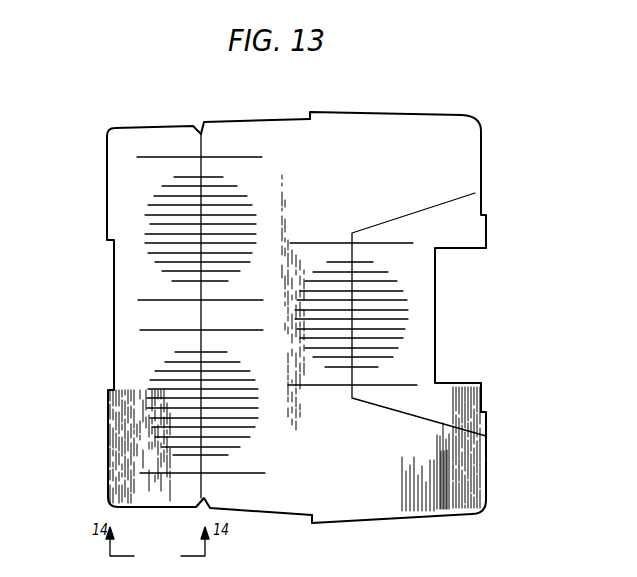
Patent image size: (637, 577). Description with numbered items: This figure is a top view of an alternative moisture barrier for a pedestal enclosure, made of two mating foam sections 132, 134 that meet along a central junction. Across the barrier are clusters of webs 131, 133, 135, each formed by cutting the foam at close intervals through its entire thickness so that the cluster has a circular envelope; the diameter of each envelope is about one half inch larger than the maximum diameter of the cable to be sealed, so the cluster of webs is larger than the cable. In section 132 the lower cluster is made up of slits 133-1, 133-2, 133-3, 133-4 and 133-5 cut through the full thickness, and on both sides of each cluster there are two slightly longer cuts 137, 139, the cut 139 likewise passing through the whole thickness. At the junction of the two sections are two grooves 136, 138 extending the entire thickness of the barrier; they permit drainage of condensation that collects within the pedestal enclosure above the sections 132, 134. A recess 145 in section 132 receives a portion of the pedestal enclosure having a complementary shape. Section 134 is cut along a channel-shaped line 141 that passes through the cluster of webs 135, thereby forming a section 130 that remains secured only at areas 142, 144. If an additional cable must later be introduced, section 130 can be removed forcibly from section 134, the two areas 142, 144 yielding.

The moisture barrier section 130 is at (458, 235).
The web 131 is at (152, 221).
The moisture barrier section 132 is at (128, 127).
The web 133 is at (168, 404).
The slit 133-1 is at (183, 456).
The slit 133-2 is at (173, 448).
The slit 133-3 is at (164, 438).
The slit 133-4 is at (163, 428).
The slit 133-5 is at (157, 417).
The moisture barrier section 134 is at (404, 113).
The web 135 is at (405, 318).
The groove 136 is at (201, 126).
The cut 137 is at (260, 157).
The groove 138 is at (197, 513).
The cut 139 is at (227, 300).
The line 141 is at (431, 209).
The area 142 is at (476, 192).
The area 144 is at (486, 436).
The recess 145 is at (113, 323).